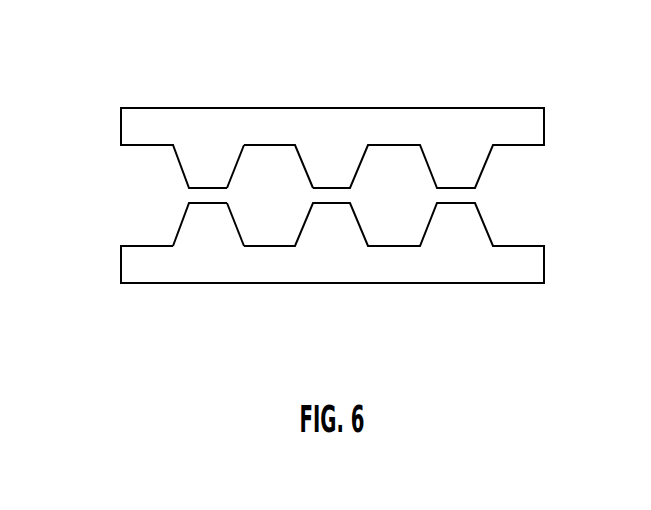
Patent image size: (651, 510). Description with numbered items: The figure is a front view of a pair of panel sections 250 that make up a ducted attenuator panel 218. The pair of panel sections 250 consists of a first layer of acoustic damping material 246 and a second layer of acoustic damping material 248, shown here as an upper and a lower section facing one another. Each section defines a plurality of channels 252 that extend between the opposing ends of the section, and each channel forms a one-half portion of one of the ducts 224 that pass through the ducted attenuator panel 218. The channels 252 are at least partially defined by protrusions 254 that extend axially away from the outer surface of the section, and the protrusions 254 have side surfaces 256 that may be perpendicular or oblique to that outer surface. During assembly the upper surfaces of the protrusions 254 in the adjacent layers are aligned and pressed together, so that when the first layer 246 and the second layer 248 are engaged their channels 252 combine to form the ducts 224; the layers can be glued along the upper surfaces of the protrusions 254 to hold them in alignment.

The ducted attenuator panel 218 is at (320, 210).
The ducts 224 is at (238, 162).
The first layer of acoustic damping material 246 is at (332, 114).
The second layer of acoustic damping material 248 is at (332, 292).
The pair of panel sections 250 is at (373, 210).
The channels 252 is at (272, 156).
The protrusions 254 is at (213, 224).
The side surfaces 256 is at (237, 226).